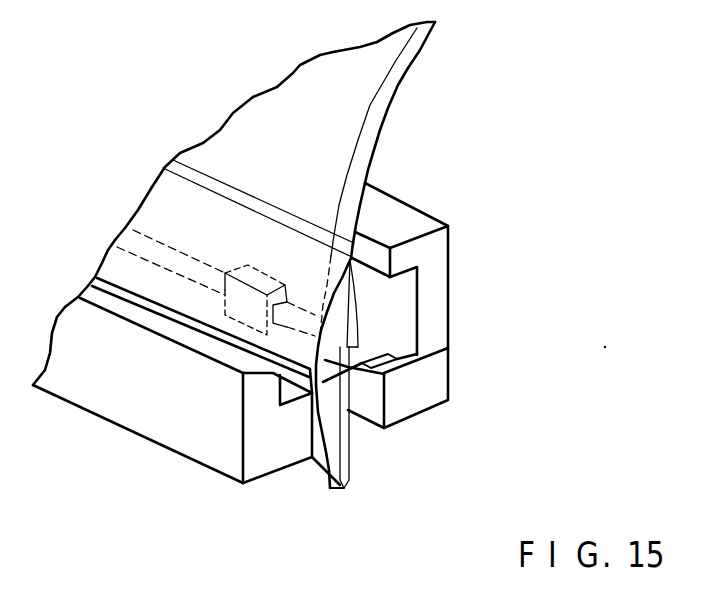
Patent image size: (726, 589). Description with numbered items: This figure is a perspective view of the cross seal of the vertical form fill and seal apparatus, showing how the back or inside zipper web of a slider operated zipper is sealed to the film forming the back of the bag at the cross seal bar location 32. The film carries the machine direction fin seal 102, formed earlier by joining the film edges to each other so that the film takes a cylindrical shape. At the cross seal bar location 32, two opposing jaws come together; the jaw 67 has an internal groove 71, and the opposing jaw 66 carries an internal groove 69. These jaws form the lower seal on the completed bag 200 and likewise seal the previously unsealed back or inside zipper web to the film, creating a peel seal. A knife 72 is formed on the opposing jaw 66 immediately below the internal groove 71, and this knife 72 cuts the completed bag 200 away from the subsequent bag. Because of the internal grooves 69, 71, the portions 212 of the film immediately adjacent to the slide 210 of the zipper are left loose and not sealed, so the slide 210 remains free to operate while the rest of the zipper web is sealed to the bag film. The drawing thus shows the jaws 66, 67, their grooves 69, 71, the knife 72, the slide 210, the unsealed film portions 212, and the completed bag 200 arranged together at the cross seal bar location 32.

The machine direction fin seal 102 is at (397, 72).
The cross seal bar location 32 is at (442, 242).
The opposing jaw 67 is at (440, 265).
The internal groove 71 is at (408, 276).
The knife 72 is at (390, 368).
The opposing jaw 66 is at (257, 438).
The internal groove 69 is at (287, 398).
The completed bag 200 is at (350, 468).
The portions of film 212 is at (360, 343).
The slide 210 is at (225, 278).